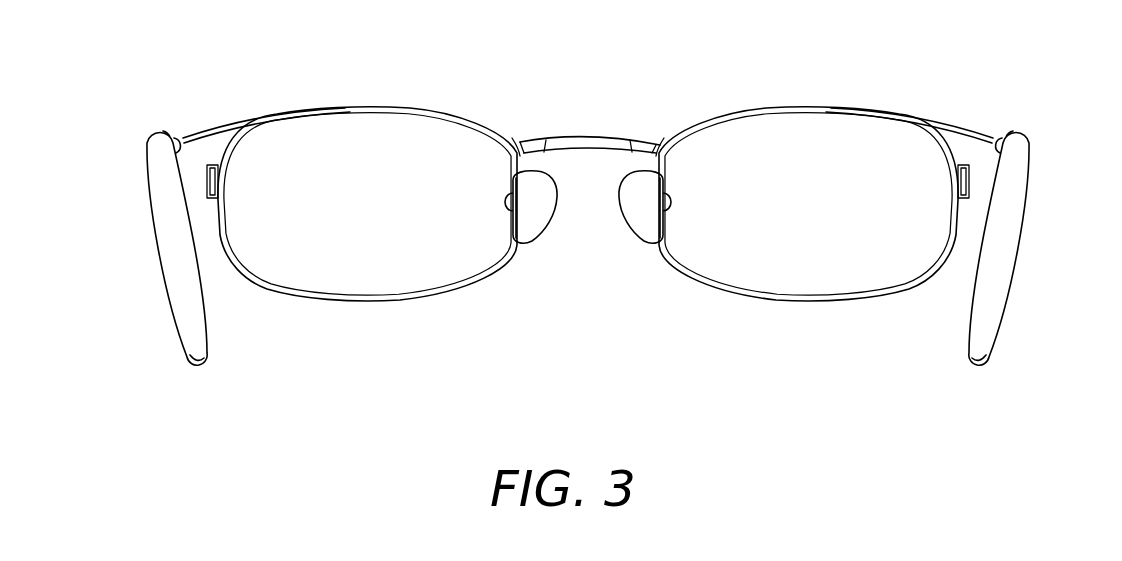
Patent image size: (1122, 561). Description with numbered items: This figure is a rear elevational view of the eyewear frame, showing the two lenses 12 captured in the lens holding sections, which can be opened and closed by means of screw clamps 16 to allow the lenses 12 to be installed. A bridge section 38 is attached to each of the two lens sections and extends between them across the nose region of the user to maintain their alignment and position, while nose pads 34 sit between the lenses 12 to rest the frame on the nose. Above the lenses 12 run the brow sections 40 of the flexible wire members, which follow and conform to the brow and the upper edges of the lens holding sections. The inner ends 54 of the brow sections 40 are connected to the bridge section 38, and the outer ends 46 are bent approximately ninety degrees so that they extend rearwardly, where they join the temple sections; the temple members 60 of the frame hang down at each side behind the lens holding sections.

The lenses 12 is at (395, 259).
The screw clamps 16 is at (970, 178).
The nose pads 34 is at (640, 212).
The bridge section 38 is at (593, 135).
The brow sections 40 is at (405, 108).
The outer ends 46 is at (238, 120).
The inner ends 54 is at (522, 137).
The temple 60 is at (167, 247).